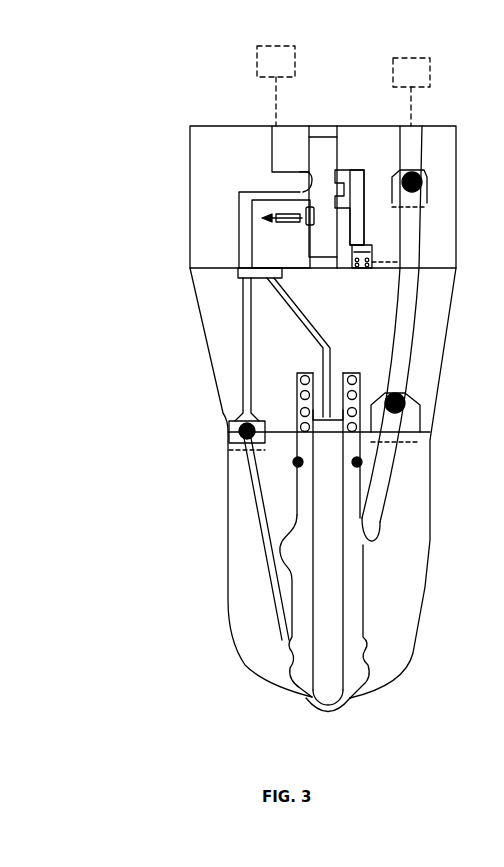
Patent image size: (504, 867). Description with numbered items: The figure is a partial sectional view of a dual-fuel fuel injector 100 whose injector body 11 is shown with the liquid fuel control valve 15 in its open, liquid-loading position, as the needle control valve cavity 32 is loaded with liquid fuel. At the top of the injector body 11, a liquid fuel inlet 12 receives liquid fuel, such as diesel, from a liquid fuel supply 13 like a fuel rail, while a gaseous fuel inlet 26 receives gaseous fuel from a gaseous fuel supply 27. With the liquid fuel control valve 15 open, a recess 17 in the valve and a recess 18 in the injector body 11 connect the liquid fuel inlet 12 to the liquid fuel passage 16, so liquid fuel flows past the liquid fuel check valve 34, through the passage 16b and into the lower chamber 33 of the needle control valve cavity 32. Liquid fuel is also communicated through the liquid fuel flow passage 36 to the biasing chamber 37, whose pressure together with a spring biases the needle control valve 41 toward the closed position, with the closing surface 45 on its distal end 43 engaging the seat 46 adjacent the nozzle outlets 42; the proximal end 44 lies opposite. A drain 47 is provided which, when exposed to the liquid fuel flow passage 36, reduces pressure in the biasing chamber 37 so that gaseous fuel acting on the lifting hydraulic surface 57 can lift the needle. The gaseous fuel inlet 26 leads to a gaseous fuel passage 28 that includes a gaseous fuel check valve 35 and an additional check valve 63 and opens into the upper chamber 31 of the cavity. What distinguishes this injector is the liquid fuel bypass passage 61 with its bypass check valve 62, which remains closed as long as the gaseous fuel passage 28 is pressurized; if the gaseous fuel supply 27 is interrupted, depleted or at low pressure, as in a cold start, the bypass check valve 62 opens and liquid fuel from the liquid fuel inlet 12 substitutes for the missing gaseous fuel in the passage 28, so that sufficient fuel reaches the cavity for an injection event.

The fuel injector 100 is at (110, 572).
The injector body 11 is at (204, 368).
The liquid fuel inlet 12 is at (270, 148).
The liquid fuel supply 13 is at (282, 44).
The liquid fuel control valve 15 is at (326, 262).
The liquid fuel passage 16 is at (245, 306).
The liquid fuel passage 16b is at (253, 493).
The recess 17 is at (345, 168).
The recess 18 is at (305, 183).
The gaseous fuel inlet 26 is at (415, 146).
The gaseous fuel supply 27 is at (416, 57).
The gaseous fuel passage 28 is at (413, 318).
The upper chamber 31 is at (380, 600).
The needle control valve cavity 32 is at (356, 598).
The lower chamber 33 is at (363, 658).
The liquid fuel check valve 34 is at (222, 446).
The gaseous fuel check valve 35 is at (432, 424).
The liquid fuel flow passage 36 is at (302, 318).
The biasing chamber 37 is at (285, 448).
The needle control valve 41 is at (300, 594).
The nozzle outlets 42 is at (332, 713).
The distal end 43 is at (353, 707).
The proximal end 44 is at (338, 440).
The closing surface 45 is at (308, 694).
The seat 46 is at (337, 705).
The drain 47 is at (299, 223).
The lifting hydraulic surface 57 is at (312, 533).
The liquid fuel bypass passage 61 is at (358, 174).
The bypass check valve 62 is at (370, 252).
The check valve 63 is at (436, 176).